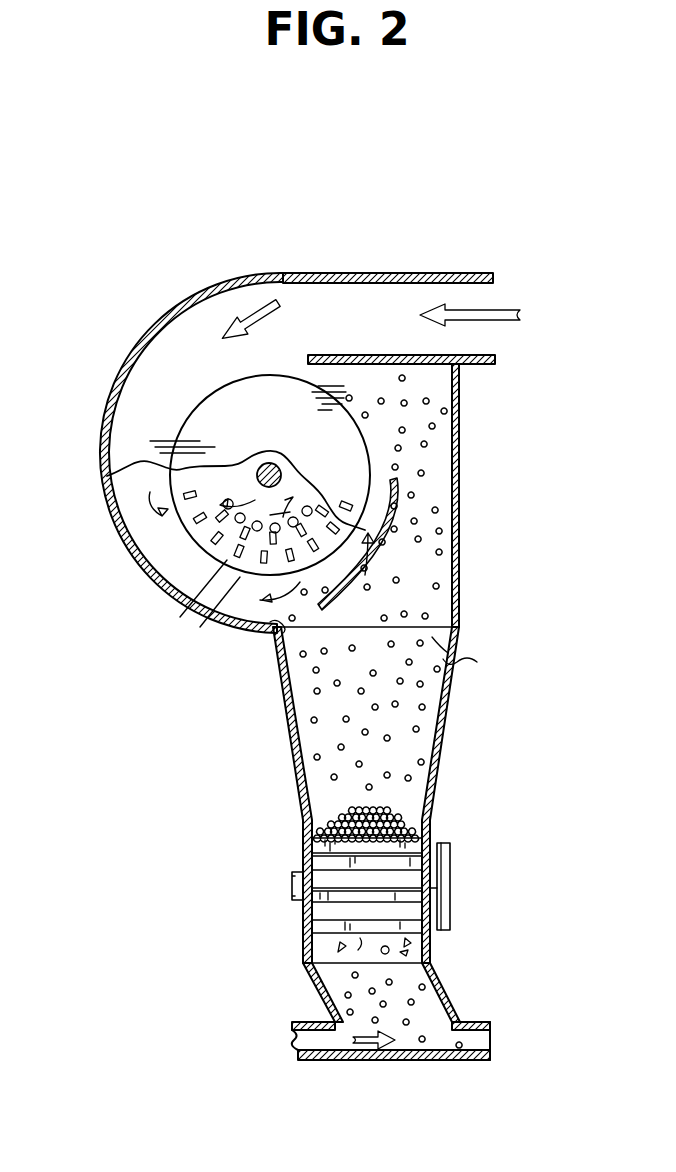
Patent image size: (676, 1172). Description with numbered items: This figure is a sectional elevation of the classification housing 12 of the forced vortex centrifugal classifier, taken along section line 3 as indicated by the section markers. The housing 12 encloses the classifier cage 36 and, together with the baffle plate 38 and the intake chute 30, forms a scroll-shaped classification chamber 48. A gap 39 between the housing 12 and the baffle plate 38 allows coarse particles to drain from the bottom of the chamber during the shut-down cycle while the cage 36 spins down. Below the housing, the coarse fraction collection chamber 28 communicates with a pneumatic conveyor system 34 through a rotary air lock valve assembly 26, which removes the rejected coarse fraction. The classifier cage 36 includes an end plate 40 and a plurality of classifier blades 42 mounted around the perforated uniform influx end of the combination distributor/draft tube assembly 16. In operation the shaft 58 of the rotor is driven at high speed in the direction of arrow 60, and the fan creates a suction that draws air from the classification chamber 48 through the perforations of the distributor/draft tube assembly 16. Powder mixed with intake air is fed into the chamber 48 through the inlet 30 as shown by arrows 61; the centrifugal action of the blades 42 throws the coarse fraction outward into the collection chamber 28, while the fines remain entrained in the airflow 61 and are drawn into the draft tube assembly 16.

The section line 3- 3 is at (271, 250).
The classification housing 12 is at (148, 336).
The combination distributor/draft tube assembly 16 is at (232, 467).
The rotary air lock valve assembly 26 is at (304, 913).
The coarse fraction collection chamber 28 is at (447, 710).
The intake chute 30 is at (490, 272).
The pneumatic conveyor system 34 is at (344, 1062).
The classifier cage 36 is at (373, 455).
The baffle plate 38 is at (401, 506).
The gap 39 is at (277, 640).
The end plate 40 is at (112, 478).
The classifier blades 42 is at (190, 607).
The classification chamber 48 is at (207, 328).
The shaft 58 is at (253, 441).
The arrow 60 is at (283, 432).
The arrows 61 is at (517, 315).